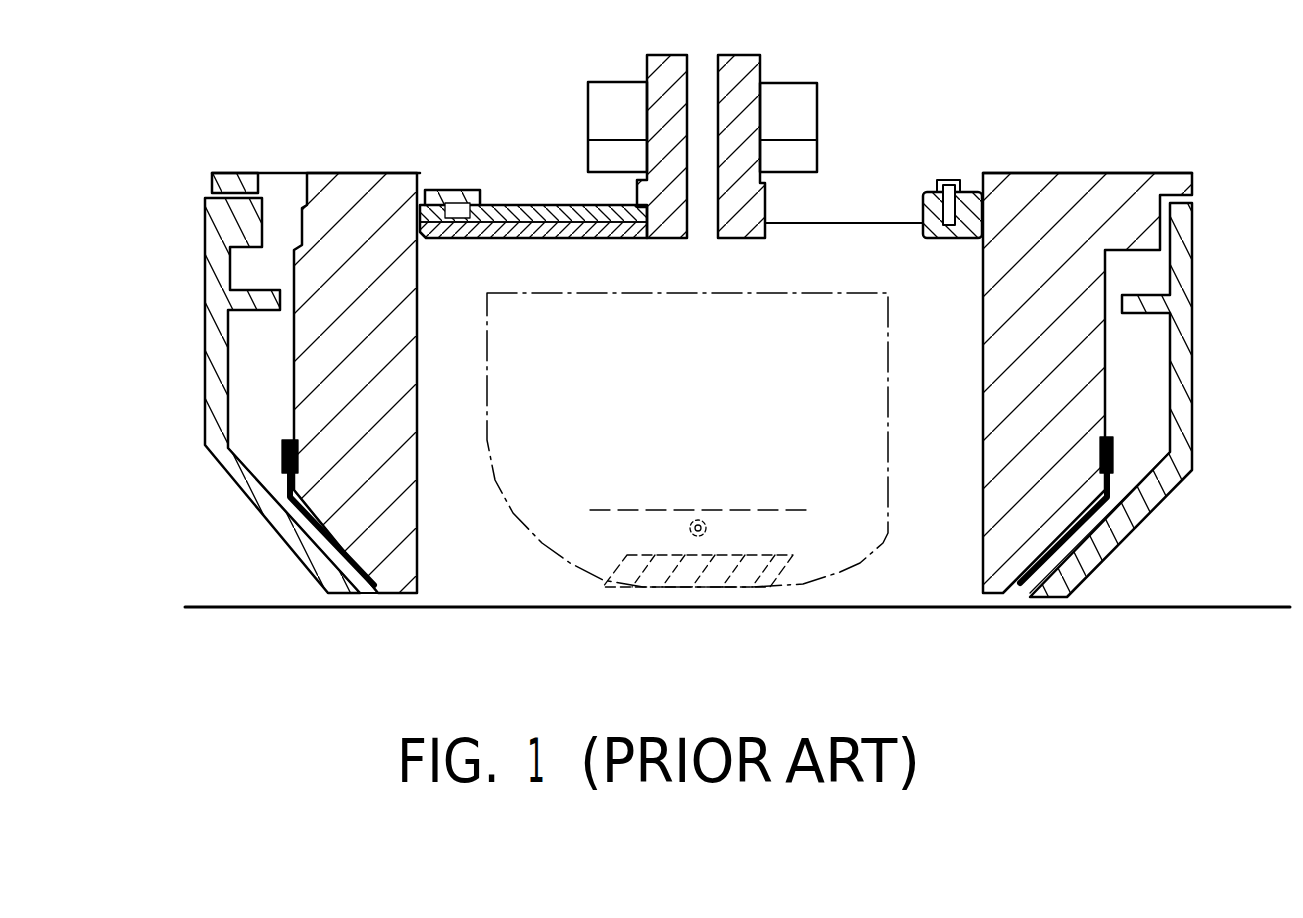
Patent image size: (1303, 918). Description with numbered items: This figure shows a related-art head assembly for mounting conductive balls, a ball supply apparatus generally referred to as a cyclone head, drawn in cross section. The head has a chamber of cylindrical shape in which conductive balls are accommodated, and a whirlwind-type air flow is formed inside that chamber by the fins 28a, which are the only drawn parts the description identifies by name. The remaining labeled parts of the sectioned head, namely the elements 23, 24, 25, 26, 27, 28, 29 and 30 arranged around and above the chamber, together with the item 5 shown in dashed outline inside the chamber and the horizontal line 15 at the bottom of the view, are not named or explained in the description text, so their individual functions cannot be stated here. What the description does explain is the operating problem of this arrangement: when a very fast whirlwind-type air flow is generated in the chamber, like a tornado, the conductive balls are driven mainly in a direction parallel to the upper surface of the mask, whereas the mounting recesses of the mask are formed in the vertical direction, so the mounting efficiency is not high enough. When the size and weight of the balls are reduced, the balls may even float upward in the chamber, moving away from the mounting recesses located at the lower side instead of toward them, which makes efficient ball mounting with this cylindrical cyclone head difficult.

The workpiece 5 is at (865, 440).
The base surface 15 is at (1210, 605).
The right holding member 23 is at (1045, 150).
The left holding member 24 is at (345, 195).
The outer sleeve 25 is at (210, 284).
The cap member 26 is at (240, 365).
The inclined holding face 27 is at (375, 550).
The contact pad 28 is at (290, 438).
The fins 28a is at (310, 545).
The connecting plate 29 is at (545, 205).
The lead wire 30 is at (848, 221).